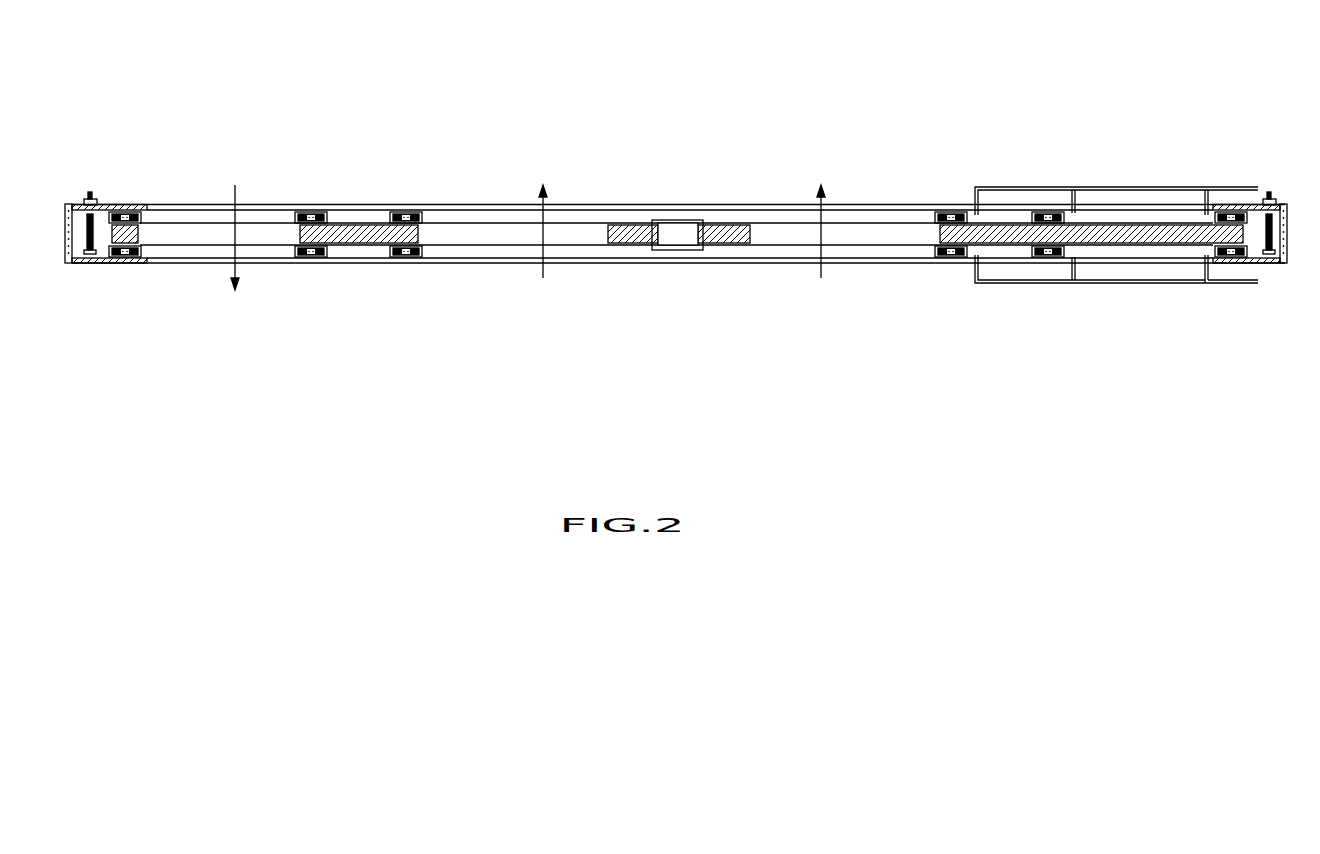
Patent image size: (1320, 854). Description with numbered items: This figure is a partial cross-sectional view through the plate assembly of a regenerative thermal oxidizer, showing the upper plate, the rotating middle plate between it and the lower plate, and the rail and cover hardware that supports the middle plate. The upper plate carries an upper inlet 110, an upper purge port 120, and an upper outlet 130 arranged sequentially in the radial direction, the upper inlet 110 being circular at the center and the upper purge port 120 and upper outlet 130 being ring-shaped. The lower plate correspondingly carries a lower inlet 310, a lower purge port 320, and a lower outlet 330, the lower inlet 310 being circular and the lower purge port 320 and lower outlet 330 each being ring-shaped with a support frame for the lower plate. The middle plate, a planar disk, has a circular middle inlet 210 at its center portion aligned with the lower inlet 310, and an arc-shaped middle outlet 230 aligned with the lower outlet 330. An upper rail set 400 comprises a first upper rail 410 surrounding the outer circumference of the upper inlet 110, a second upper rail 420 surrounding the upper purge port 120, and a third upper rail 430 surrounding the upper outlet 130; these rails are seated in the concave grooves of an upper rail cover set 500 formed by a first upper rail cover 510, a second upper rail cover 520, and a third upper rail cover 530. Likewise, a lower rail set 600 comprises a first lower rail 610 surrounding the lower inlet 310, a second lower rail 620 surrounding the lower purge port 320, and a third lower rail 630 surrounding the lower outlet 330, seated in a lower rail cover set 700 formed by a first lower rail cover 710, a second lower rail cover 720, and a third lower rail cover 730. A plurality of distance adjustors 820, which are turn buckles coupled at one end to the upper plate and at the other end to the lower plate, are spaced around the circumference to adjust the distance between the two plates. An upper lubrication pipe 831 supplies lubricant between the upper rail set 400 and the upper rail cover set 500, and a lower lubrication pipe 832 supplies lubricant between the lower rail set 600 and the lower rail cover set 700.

The upper inlet 110 is at (633, 207).
The upper purge port 120 is at (358, 207).
The upper outlet 130 is at (227, 210).
The middle inlet 210 is at (517, 232).
The middle outlet 230 is at (173, 232).
The lower inlet 310 is at (665, 263).
The lower purge port 320 is at (998, 263).
The lower outlet 330 is at (1142, 263).
The upper rail set 400 is at (265, 123).
The first upper rail 410 is at (383, 147).
The second upper rail 420 is at (305, 210).
The third upper rail 430 is at (128, 205).
The upper rail cover set 500 is at (1091, 152).
The first upper rail cover 510 is at (965, 213).
The second upper rail cover 520 is at (1040, 212).
The third upper rail cover 530 is at (1184, 180).
The lower rail set 600 is at (265, 335).
The first lower rail 610 is at (385, 307).
The second lower rail 620 is at (305, 262).
The third lower rail 630 is at (132, 263).
The lower rail cover set 700 is at (1091, 348).
The first lower rail cover 710 is at (942, 263).
The second lower rail cover 720 is at (1050, 263).
The third lower rail cover 730 is at (1217, 262).
The distance adjustor 820 is at (87, 200).
The upper lubrication pipe 831 is at (1233, 187).
The lower lubrication pipe 832 is at (1232, 285).